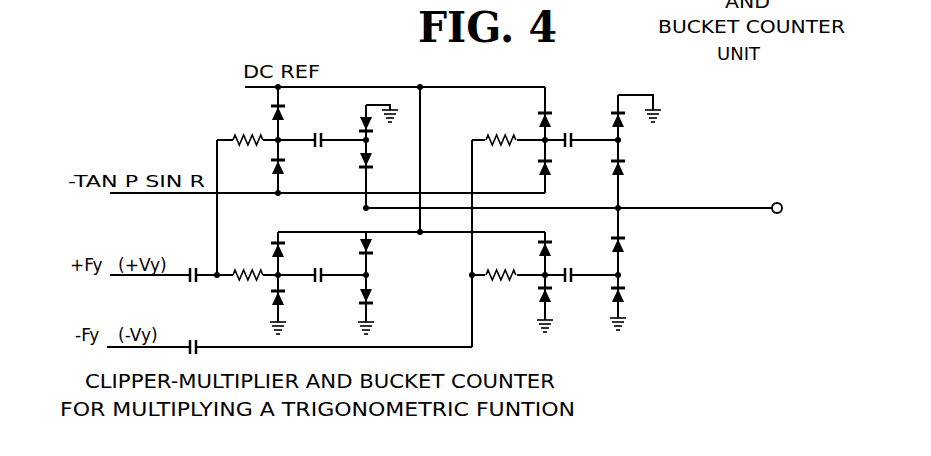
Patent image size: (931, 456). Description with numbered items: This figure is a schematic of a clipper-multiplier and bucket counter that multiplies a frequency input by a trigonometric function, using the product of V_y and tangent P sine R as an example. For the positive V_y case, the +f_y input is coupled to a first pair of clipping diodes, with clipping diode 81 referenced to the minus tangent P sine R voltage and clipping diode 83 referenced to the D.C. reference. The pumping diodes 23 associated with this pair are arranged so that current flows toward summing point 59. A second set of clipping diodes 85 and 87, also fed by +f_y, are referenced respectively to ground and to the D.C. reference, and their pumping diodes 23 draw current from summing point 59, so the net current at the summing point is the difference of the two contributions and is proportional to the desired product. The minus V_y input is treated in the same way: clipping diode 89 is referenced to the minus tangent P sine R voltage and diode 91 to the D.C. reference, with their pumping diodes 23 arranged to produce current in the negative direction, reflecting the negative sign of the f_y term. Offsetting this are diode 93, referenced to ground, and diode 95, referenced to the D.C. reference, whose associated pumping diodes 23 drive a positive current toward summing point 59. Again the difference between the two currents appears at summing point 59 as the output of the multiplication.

The pumping diodes 23 is at (373, 165).
The summing point 59 is at (780, 203).
The clipping diode 81 is at (285, 168).
The clipping diode 83 is at (285, 105).
The clipping diode 85 is at (286, 298).
The clipping diode 87 is at (285, 250).
The clipping diode 89 is at (550, 168).
The clipping diode 91 is at (548, 112).
The clipping diode 93 is at (552, 296).
The clipping diode 95 is at (551, 242).